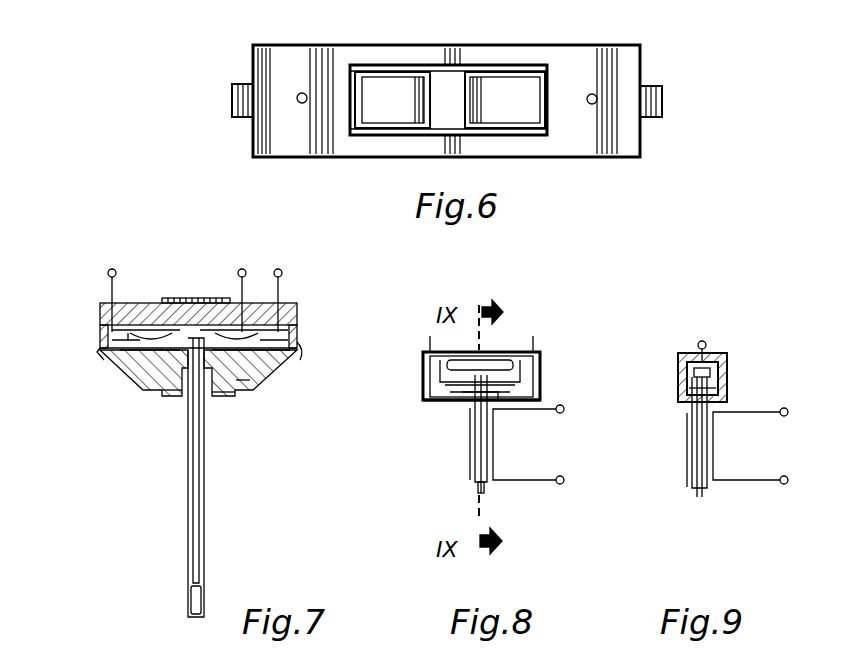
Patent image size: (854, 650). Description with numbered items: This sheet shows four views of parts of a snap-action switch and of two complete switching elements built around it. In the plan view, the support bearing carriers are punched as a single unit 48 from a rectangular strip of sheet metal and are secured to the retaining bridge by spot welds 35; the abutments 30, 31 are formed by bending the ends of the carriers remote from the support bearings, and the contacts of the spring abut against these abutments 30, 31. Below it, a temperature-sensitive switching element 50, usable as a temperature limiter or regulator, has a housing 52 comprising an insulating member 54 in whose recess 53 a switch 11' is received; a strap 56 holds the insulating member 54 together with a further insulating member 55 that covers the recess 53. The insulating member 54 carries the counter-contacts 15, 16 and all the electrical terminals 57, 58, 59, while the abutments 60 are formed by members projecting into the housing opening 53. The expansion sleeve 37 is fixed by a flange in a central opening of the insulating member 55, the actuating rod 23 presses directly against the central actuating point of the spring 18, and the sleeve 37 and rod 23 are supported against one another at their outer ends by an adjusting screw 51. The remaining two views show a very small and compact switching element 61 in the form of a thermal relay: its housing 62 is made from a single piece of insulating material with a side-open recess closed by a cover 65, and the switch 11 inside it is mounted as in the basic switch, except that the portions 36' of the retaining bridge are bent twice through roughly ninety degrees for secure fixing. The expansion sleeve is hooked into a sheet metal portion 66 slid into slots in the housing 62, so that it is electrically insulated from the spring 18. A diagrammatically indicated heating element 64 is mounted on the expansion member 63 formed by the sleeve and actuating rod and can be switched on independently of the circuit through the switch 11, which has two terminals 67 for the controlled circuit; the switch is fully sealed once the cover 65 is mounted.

In FIG. 6, the abutment 30 is at (232, 100).
In FIG. 6, the abutment 31 is at (662, 100).
In FIG. 6, the spot weld 35 is at (302, 93).
In FIG. 6, the support bearing carrier unit 48 is at (524, 58).
In FIG. 7, the insulating member 54 is at (150, 312).
In FIG. 7, the strap 56 is at (198, 298).
In FIG. 7, the counter-contact 15 is at (130, 326).
In FIG. 7, the counter-contact 16 is at (268, 326).
In FIG. 7, the electrical terminal 57 is at (112, 269).
In FIG. 7, the electrical terminal 58 is at (242, 269).
In FIG. 7, the electrical terminal 59 is at (282, 272).
In FIG. 7, the housing 52 is at (122, 378).
In FIG. 7, the abutment 60 is at (108, 360).
In FIG. 7, the switch 11' is at (201, 390).
In FIG. 7, the recess 53 is at (299, 356).
In FIG. 7, the spring 18 is at (246, 372).
In FIG. 7, the insulating member 55 is at (226, 394).
In FIG. 7, the temperature-sensitive switching element 50 is at (172, 400).
In FIG. 7, the expansion sleeve 37 is at (205, 490).
In FIG. 7, the actuating rod 23 is at (196, 537).
In FIG. 7, the adjusting screw 51 is at (190, 607).
In FIG. 8, the housing 62 is at (430, 388).
In FIG. 9, the housing 62 is at (682, 375).
In FIG. 8, the terminal 67 is at (430, 342).
In FIG. 9, the terminal 67 is at (706, 343).
In FIG. 8, the switch 11 is at (492, 344).
In FIG. 8, the portion of the retaining bridge 36' is at (525, 378).
In FIG. 8, the switching element 61 is at (425, 414).
In FIG. 8, the sheet metal portion 66 is at (462, 400).
In FIG. 9, the sheet metal portion 66 is at (716, 386).
In FIG. 8, the expansion member 63 is at (466, 476).
In FIG. 9, the expansion member 63 is at (686, 478).
In FIG. 8, the heating element 64 is at (495, 450).
In FIG. 9, the heating element 64 is at (715, 450).
In FIG. 9, the cover 65 is at (712, 372).